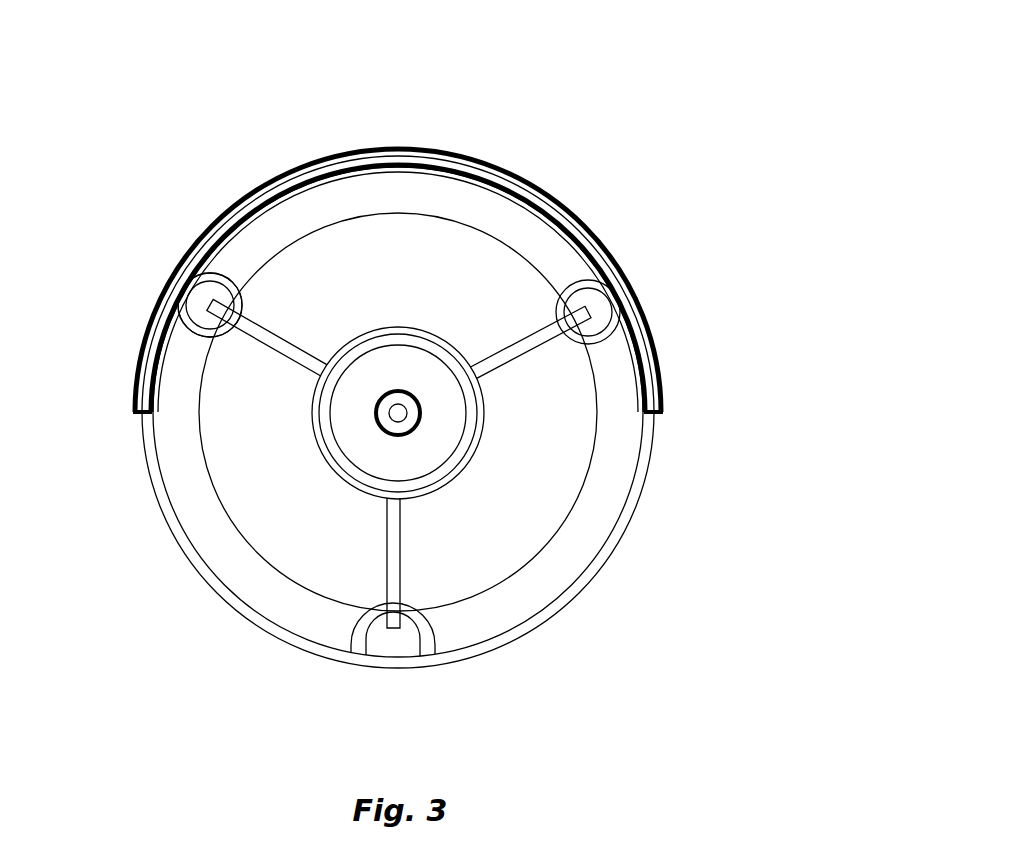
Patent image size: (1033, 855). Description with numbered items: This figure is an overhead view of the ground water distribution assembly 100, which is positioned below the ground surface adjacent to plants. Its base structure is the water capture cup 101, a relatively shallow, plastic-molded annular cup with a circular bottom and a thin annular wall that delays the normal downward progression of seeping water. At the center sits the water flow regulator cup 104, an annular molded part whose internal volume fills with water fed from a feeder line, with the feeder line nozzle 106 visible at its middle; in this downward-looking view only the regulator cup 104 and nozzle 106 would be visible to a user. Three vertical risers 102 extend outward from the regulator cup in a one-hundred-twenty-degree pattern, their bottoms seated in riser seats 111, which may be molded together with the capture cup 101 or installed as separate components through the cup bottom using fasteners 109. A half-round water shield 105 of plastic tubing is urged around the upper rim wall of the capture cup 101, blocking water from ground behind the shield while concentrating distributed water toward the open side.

The ground water distribution assembly 100 is at (578, 146).
The water capture cup 101 is at (625, 532).
The vertical risers 102 is at (388, 557).
The water flow regulator cup 104 is at (484, 420).
The half-round water shield 105 is at (198, 240).
The feeder line nozzle 106 is at (398, 400).
The fasteners 109 is at (600, 312).
The riser seats 111 is at (240, 303).